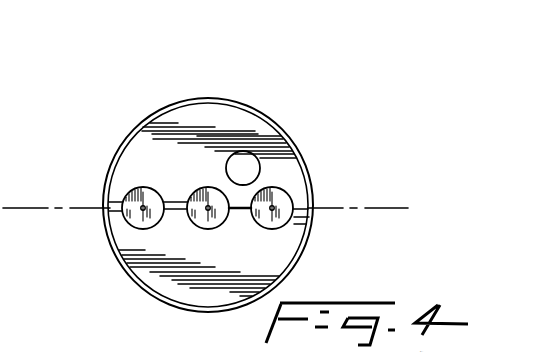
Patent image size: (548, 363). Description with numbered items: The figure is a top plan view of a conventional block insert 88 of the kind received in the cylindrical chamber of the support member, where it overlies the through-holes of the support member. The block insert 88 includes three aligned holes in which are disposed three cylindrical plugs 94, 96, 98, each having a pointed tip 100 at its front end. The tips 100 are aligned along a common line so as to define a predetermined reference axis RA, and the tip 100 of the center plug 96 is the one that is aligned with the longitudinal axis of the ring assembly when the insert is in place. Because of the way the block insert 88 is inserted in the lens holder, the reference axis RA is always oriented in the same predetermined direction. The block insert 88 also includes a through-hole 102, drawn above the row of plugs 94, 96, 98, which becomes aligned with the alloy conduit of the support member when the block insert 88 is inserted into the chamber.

The block insert 88 is at (262, 101).
The cylindrical plug 94 is at (129, 223).
The center plug 96 is at (193, 226).
The cylindrical plug 98 is at (282, 228).
The pointed tips 100 is at (141, 207).
The through-hole 102 is at (244, 166).
The reference axis RA is at (386, 200).